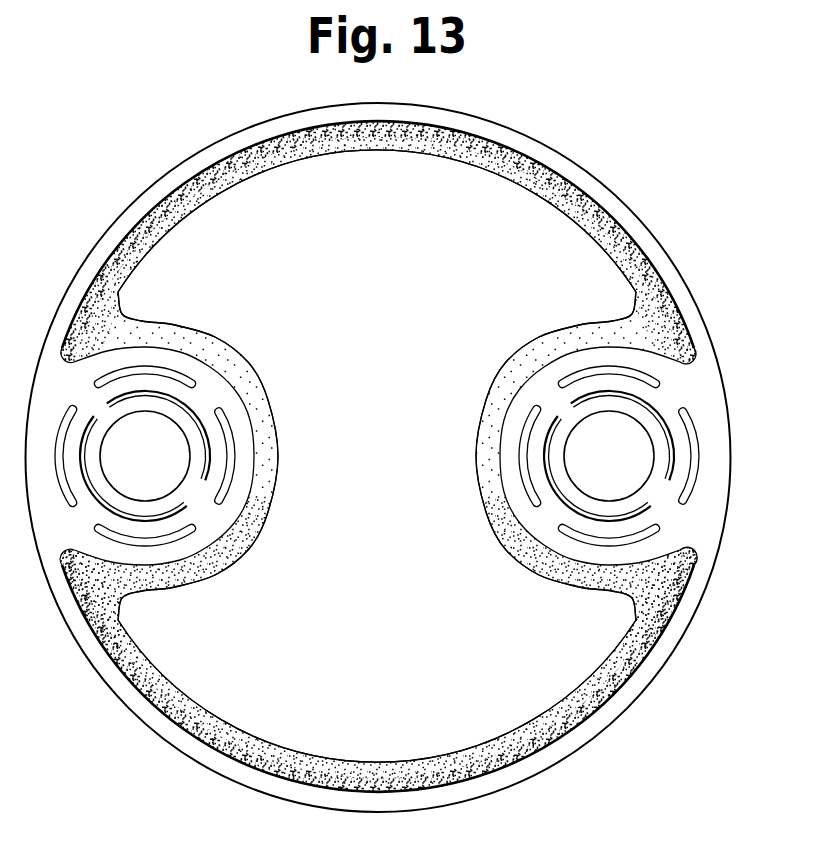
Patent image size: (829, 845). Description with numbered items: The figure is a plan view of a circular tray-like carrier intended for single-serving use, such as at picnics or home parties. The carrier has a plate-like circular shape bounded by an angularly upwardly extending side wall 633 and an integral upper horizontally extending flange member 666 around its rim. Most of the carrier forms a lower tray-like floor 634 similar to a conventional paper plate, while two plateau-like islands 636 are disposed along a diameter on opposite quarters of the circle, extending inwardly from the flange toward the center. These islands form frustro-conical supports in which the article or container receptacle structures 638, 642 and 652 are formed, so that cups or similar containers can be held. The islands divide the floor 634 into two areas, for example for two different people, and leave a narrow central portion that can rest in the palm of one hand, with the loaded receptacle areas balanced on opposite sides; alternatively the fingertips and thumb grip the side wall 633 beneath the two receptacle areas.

The side wall 633 is at (405, 767).
The tray-like floor 634 is at (395, 458).
The plateau-like islands 636 is at (185, 371).
The container receptacle structure 638 is at (190, 457).
The container receptacle structure 642 is at (212, 409).
The container receptacle structure 652 is at (561, 381).
The flange member 666 is at (579, 737).